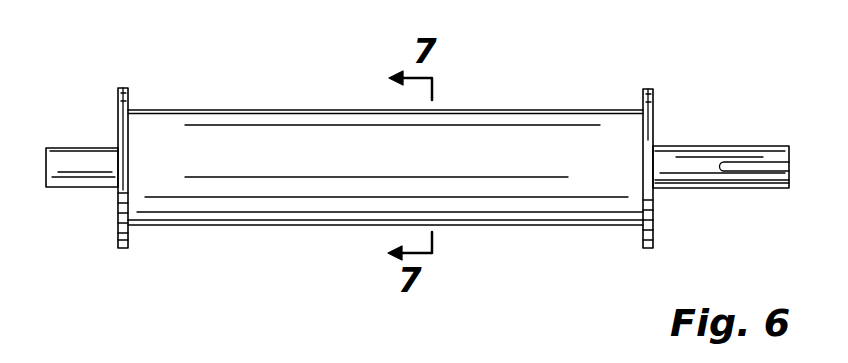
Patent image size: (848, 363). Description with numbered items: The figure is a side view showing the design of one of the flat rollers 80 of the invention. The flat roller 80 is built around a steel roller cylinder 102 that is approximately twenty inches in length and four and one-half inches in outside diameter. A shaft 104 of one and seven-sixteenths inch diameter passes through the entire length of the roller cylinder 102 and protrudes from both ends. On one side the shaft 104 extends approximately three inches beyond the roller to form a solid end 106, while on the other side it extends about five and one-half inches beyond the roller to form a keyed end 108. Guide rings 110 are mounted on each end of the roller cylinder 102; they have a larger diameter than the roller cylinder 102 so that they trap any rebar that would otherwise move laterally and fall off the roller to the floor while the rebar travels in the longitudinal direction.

The flat roller 80 is at (474, 72).
The roller cylinder 102 is at (530, 143).
The shaft 104 is at (663, 143).
The solid end 106 is at (93, 157).
The keyed end 108 is at (722, 178).
The guide rings 110 is at (117, 233).